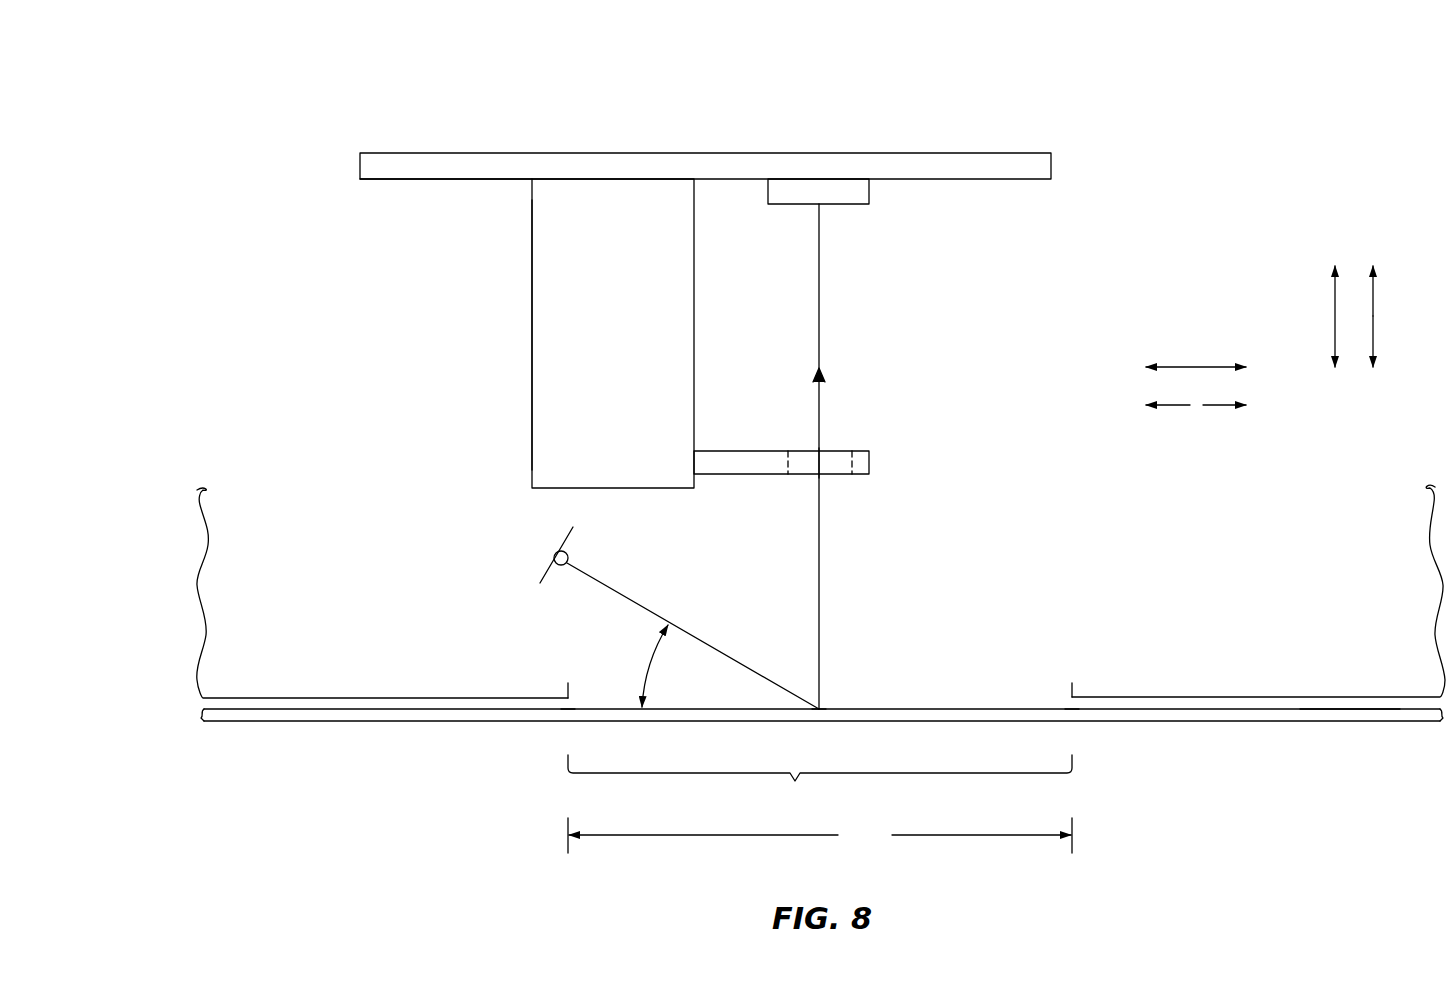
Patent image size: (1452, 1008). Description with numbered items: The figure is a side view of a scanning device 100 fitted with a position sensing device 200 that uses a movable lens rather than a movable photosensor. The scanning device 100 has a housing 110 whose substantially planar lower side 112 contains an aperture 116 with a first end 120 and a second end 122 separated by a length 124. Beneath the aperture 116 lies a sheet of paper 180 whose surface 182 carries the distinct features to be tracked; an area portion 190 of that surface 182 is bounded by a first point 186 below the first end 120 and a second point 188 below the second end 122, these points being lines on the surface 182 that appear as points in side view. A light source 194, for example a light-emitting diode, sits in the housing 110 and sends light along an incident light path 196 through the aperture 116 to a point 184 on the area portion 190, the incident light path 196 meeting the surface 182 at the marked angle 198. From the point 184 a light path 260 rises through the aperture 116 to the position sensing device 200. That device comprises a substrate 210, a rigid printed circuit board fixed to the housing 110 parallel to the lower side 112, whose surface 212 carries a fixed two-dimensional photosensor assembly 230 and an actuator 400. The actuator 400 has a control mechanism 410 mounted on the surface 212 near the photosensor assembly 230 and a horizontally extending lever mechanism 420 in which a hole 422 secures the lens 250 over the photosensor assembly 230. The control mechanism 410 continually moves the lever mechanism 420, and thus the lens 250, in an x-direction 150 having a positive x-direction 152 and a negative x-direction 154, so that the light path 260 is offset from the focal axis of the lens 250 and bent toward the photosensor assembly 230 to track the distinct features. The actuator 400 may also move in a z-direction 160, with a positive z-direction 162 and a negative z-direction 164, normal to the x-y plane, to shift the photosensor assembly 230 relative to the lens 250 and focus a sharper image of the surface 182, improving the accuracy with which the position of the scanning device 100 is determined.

The scanning device 100 is at (1293, 90).
The housing 110 is at (197, 582).
The lower side 112 is at (1258, 697).
The aperture 116 is at (930, 683).
The first end 120 is at (568, 683).
The second end 122 is at (1075, 683).
The length 124 is at (820, 835).
The x-direction 150 is at (1196, 366).
The positive x-direction 152 is at (1213, 407).
The negative x-direction 154 is at (1178, 407).
The z-direction 160 is at (1333, 316).
The positive z-direction 162 is at (1375, 300).
The negative z-direction 164 is at (1375, 333).
The sheet of paper 180 is at (1333, 723).
The surface 182 is at (1353, 708).
The point 184 is at (819, 722).
The first point 186 is at (568, 712).
The second point 188 is at (1072, 710).
The area portion 190 is at (820, 787).
The light source 194 is at (570, 555).
The incident light path 196 is at (697, 635).
The angle of incidence 198 is at (648, 660).
The position sensing device 200 is at (745, 153).
The substrate 210 is at (1053, 166).
The surface 212 is at (437, 183).
The two-dimensional photosensor assembly 230 is at (872, 197).
The lens 250 is at (829, 476).
The light path 260 is at (819, 585).
The actuator 400 is at (693, 351).
The control mechanism 410 is at (531, 322).
The lever mechanism 420 is at (869, 462).
The hole 422 is at (800, 488).